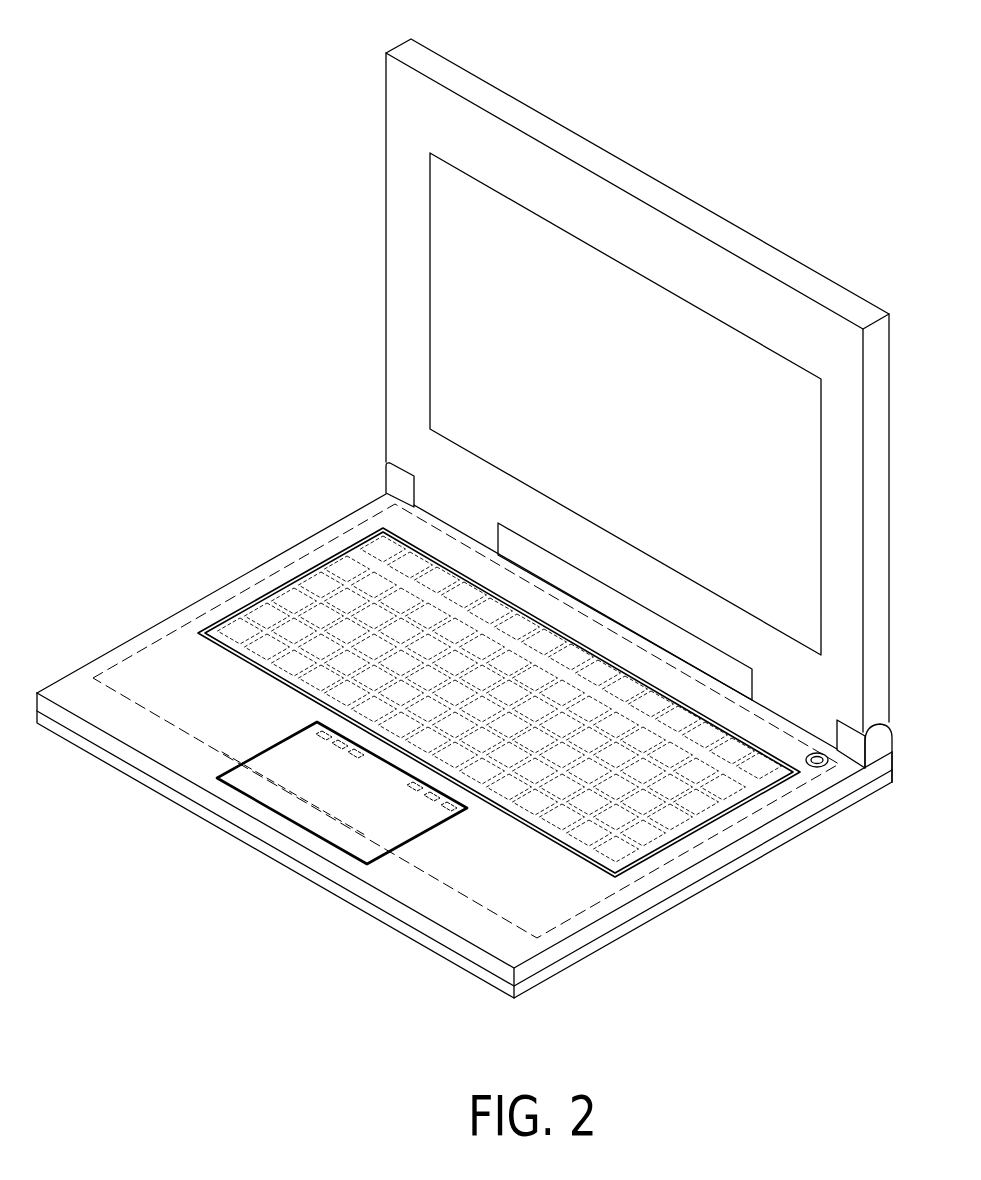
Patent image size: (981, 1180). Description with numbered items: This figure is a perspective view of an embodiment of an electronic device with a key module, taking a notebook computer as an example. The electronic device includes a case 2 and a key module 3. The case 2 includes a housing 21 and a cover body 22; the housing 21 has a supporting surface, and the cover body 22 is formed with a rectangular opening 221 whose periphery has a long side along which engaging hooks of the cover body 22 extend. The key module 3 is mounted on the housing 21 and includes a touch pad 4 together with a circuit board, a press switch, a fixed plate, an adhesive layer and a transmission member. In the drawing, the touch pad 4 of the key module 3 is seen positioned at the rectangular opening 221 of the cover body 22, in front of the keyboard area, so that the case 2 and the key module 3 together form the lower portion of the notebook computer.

The case 2 is at (464, 528).
The housing 21 is at (658, 910).
The cover body 22 is at (443, 853).
The rectangular opening 221 is at (325, 841).
The key module 3 is at (394, 850).
The touch pad 4 is at (260, 797).